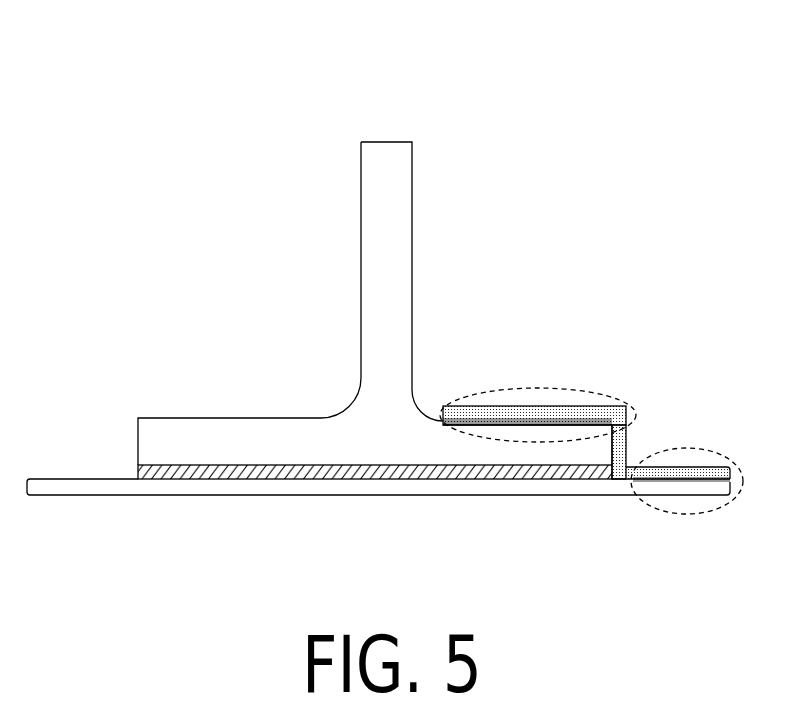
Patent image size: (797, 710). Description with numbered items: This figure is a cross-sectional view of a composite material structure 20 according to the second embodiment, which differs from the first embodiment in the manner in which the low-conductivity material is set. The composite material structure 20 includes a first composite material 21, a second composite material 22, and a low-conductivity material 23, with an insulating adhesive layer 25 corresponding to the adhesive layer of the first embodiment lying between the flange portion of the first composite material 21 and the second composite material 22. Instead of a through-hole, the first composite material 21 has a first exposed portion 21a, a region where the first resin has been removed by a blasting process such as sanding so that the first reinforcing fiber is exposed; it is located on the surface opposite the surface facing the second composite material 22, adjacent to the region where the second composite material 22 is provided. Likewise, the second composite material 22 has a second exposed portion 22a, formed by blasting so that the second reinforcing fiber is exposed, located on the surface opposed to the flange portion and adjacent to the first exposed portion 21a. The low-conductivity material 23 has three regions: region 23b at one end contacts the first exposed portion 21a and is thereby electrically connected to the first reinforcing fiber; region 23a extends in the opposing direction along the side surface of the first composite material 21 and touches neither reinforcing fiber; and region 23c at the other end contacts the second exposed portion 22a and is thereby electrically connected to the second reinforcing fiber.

The composite material structure 20 is at (429, 119).
The first composite material 21 is at (395, 172).
The first exposed portion 21a is at (462, 425).
The second composite material 22 is at (75, 478).
The second exposed portion 22a is at (715, 462).
The low-conductivity material 23 is at (628, 401).
The region 23a of the low-conductivity material 23a is at (628, 446).
The region 23b of the low-conductivity material 23b is at (553, 388).
The region 23c of the low-conductivity material 23c is at (672, 516).
The insulating adhesive layer 25 is at (286, 470).